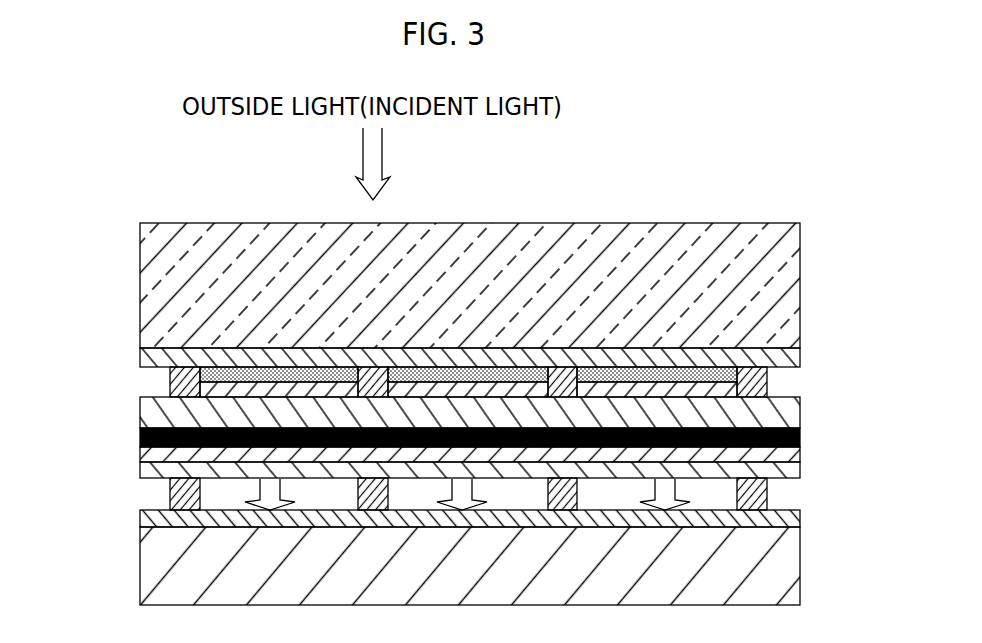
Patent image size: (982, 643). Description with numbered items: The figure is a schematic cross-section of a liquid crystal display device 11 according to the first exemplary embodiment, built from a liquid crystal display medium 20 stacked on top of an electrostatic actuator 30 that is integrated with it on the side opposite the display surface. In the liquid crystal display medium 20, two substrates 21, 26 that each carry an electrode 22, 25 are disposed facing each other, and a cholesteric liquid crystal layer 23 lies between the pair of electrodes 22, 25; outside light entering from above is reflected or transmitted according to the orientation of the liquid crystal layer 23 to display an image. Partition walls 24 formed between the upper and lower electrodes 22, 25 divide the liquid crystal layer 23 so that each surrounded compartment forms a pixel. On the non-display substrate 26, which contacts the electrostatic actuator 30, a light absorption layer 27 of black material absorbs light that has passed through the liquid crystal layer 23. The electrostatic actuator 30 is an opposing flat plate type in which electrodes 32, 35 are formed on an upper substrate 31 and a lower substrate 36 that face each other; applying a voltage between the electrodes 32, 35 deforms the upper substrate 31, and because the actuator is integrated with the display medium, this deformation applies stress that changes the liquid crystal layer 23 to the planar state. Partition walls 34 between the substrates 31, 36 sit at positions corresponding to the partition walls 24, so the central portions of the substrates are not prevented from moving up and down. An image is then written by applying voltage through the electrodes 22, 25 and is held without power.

The liquid crystal display device 11 is at (770, 188).
The liquid crystal display medium 20 is at (128, 222).
The substrate 21 is at (793, 284).
The electrode 22 is at (793, 355).
The liquid crystal layer 23 is at (667, 367).
The partition walls 24 is at (760, 377).
The electrode 25 is at (730, 388).
The substrate 26 is at (793, 415).
The light absorption layer 27 is at (800, 437).
The electrostatic actuator 30 is at (128, 605).
The upper substrate 31 is at (795, 471).
The electrode 32 is at (795, 455).
The partition walls 34 is at (766, 490).
The electrode 35 is at (793, 518).
The substrate 36 is at (793, 574).